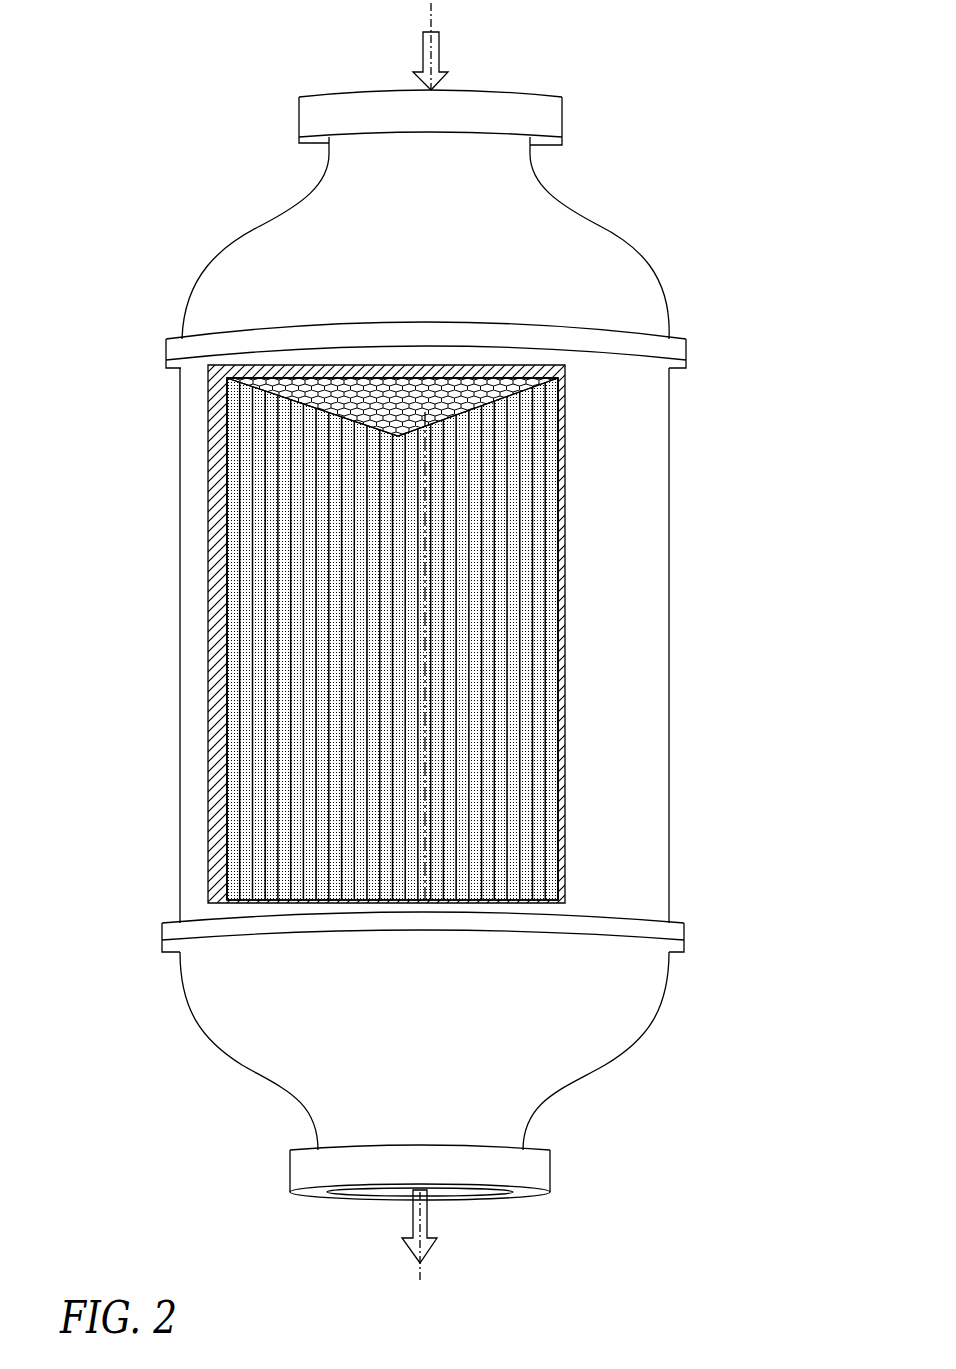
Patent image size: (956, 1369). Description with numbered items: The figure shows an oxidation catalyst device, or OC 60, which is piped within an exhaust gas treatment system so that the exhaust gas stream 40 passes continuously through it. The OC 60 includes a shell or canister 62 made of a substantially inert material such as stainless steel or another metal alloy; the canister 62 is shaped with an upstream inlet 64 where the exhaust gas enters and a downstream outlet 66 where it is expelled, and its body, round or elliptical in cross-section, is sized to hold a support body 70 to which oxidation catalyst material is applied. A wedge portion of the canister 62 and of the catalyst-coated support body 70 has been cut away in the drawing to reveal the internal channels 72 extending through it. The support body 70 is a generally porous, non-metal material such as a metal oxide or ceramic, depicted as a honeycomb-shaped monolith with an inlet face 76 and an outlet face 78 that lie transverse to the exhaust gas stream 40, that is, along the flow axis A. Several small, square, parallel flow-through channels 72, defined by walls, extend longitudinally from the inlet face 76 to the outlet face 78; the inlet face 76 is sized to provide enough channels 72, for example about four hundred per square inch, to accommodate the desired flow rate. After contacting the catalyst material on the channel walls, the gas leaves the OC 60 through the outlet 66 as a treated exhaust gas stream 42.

The exhaust gas stream 40 is at (440, 52).
The treated exhaust gas stream 42 is at (427, 1220).
The oxidation catalyst device 60 is at (137, 225).
The canister 62 is at (233, 237).
The upstream inlet 64 is at (331, 90).
The downstream outlet 66 is at (360, 1202).
The support body 70 is at (343, 633).
The flow-through channels 72 is at (265, 777).
The inlet face 76 is at (278, 392).
The outlet face 78 is at (283, 900).
The flow axis A is at (425, 605).